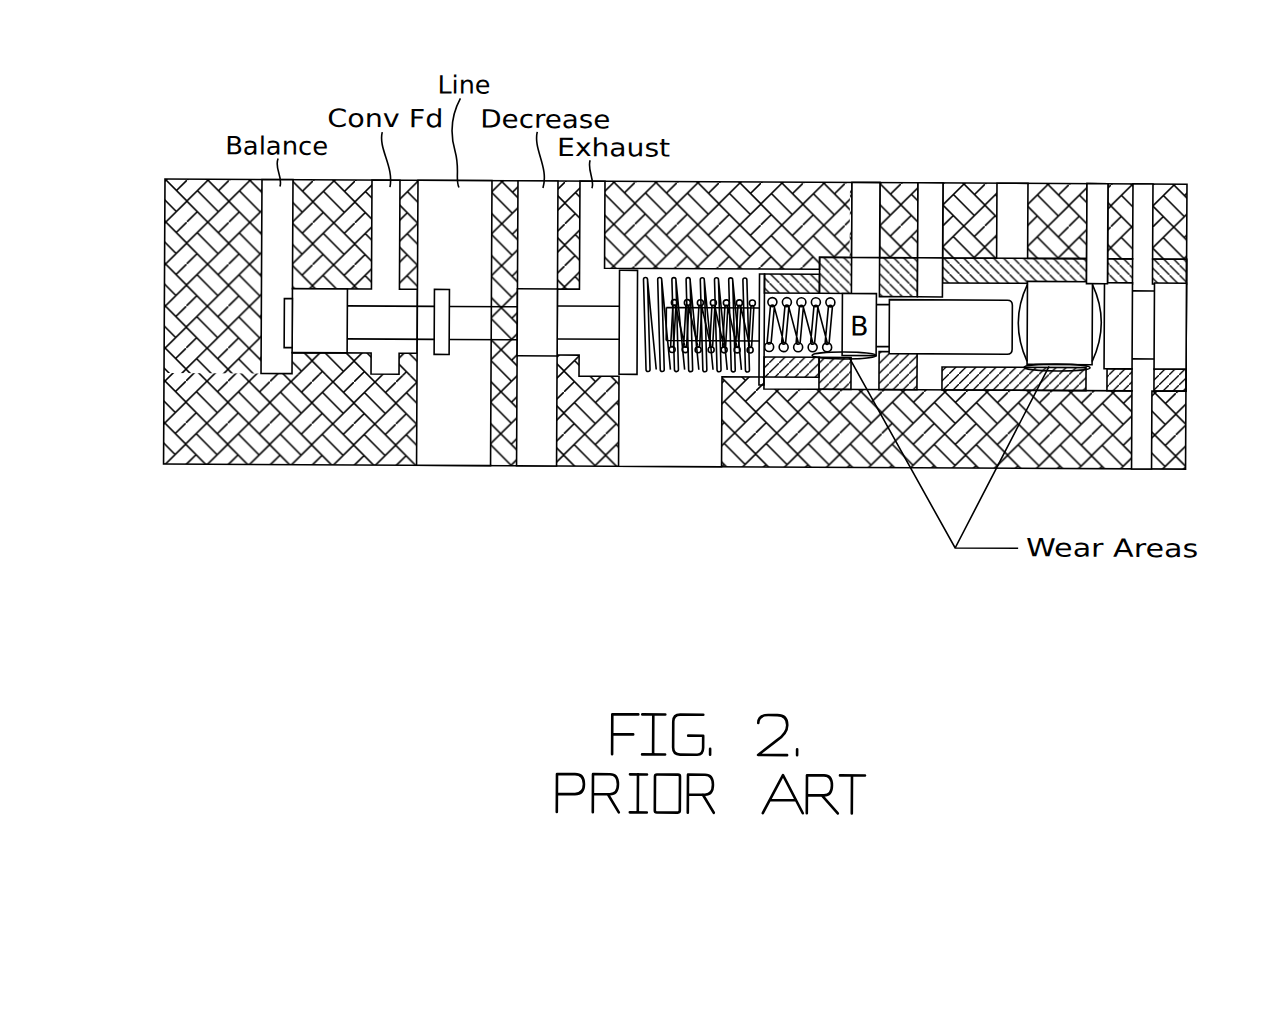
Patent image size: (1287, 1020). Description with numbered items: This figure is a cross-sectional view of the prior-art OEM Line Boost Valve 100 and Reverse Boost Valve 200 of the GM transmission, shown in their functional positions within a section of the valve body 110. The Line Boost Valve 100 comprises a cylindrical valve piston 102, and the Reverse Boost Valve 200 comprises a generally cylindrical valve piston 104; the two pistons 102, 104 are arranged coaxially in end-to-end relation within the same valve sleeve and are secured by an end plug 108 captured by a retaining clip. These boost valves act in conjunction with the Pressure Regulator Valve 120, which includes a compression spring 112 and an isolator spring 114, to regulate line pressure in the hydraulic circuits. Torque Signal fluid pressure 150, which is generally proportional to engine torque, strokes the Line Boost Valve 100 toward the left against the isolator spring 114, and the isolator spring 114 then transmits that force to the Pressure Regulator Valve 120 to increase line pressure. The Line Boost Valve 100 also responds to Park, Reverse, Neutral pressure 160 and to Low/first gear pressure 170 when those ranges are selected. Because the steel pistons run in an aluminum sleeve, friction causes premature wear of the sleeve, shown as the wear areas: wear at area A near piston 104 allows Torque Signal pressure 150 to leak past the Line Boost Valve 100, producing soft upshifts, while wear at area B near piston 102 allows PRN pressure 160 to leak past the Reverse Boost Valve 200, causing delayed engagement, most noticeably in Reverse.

The Line Boost Valve 100 is at (1104, 248).
The cylindrical valve piston 102 is at (925, 334).
The valve piston 104 is at (1038, 312).
The end plug 108 is at (1182, 341).
The valve body 110 is at (301, 464).
The compression spring 112 is at (677, 375).
The isolator spring 114 is at (808, 354).
The Pressure Regulator Valve 120 is at (566, 336).
The Torque Signal fluid pressure 150 is at (1093, 271).
The PRN fluid pressure 160 is at (869, 185).
The Low/1st fluid pressure 170 is at (929, 277).
The Reverse Boost Valve 200 is at (930, 251).